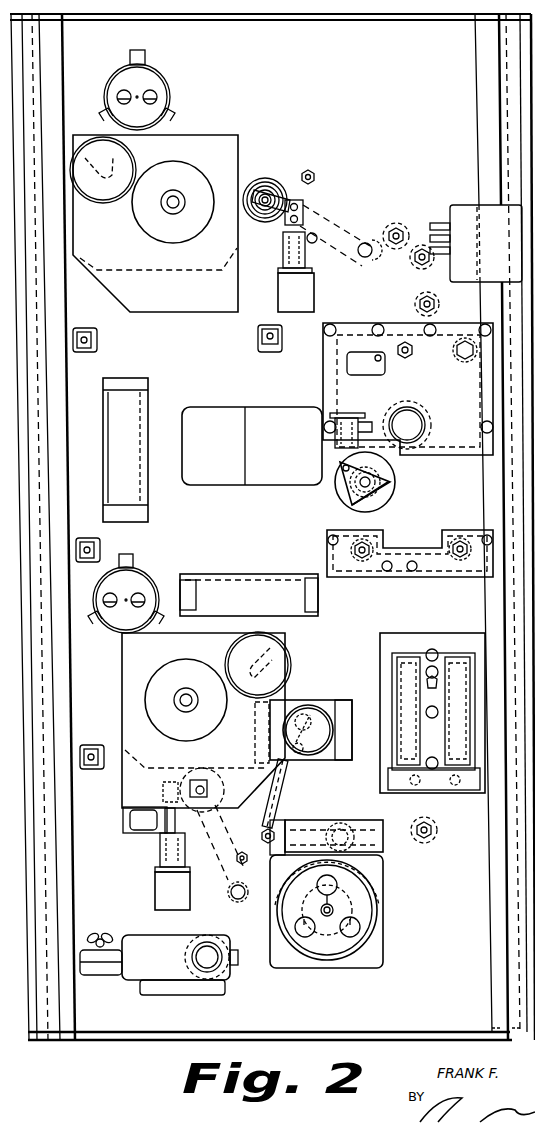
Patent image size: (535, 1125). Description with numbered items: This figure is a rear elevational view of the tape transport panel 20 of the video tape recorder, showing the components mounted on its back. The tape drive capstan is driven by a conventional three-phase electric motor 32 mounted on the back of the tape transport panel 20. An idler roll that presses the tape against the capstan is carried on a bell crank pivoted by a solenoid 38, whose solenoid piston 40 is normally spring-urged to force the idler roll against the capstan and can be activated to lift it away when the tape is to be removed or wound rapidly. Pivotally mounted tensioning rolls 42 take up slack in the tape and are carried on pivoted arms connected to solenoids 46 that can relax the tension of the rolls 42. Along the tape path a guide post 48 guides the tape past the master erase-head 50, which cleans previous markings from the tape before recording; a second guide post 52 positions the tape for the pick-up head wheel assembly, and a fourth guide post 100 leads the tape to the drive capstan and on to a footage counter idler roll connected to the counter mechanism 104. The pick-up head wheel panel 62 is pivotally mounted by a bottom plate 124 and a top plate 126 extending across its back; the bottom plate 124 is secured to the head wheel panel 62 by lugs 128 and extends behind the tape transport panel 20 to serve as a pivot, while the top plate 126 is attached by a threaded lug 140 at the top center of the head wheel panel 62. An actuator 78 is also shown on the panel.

The tape transport panel 20 is at (372, 90).
The 3-phase electric motor 32 is at (352, 900).
The solenoid 38 is at (300, 769).
The solenoid piston 40 is at (290, 806).
The tensioning rolls 42 is at (365, 258).
The solenoids 46 is at (305, 262).
The guide post 48 is at (397, 224).
The master erase-head 50 is at (420, 268).
The mounting nut 52 is at (437, 302).
The head wheel panel 62 is at (345, 512).
The switch actuator 78 is at (335, 442).
The fourth guide post 100 is at (424, 843).
The counter mechanism 104 is at (128, 985).
The bottom plate 124 is at (445, 577).
The top plate 126 is at (452, 456).
The lugs 128 is at (362, 561).
The threaded lug 140 is at (405, 359).